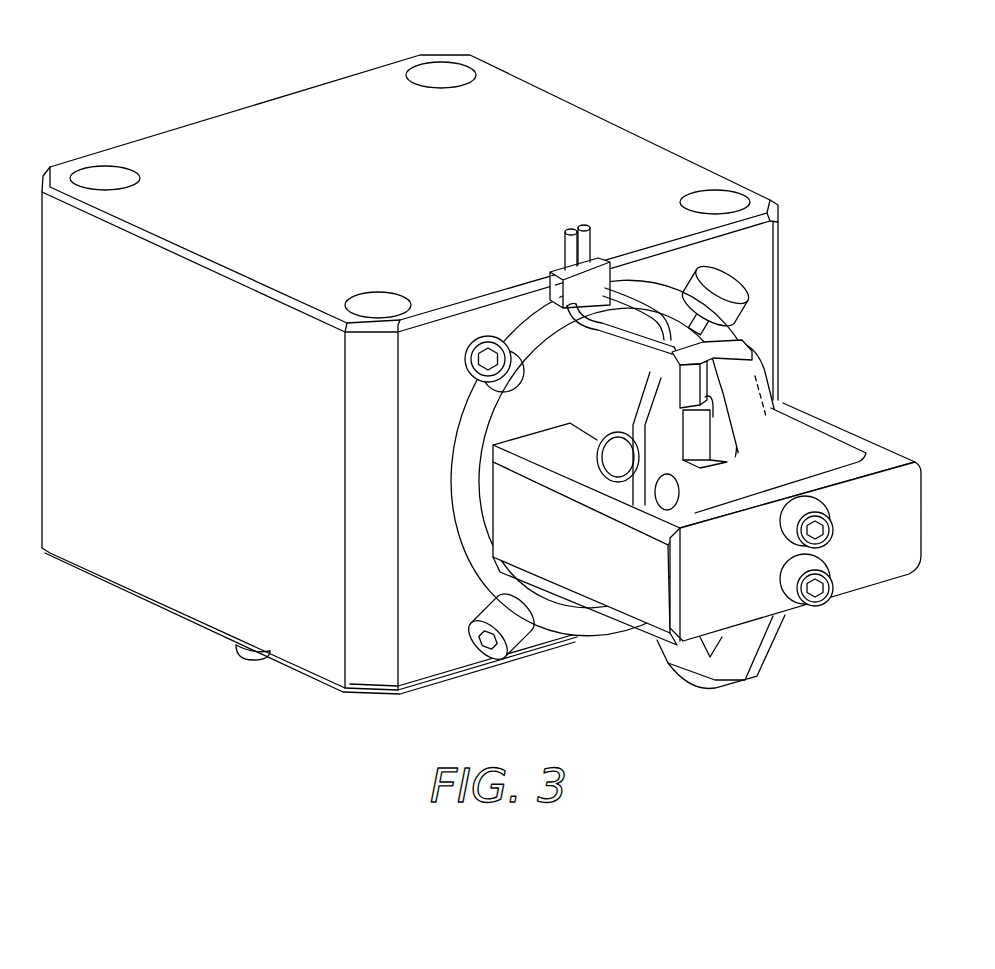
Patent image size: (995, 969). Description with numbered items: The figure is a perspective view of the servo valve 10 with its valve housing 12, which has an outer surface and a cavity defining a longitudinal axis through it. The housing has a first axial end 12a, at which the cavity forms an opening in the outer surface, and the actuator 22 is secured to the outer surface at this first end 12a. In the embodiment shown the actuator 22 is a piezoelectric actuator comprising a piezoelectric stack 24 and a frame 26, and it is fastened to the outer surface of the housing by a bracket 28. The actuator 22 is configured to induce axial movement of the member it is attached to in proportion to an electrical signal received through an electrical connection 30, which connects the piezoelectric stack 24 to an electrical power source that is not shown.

The sensor assembly 10 is at (56, 126).
The valve housing 12 is at (322, 108).
The first axial end 12a is at (441, 667).
The actuator 22 is at (842, 297).
The piezoelectric stack 24 is at (687, 440).
The frame 26 is at (786, 399).
The bracket 28 is at (912, 512).
The electrical connection 30 is at (673, 320).